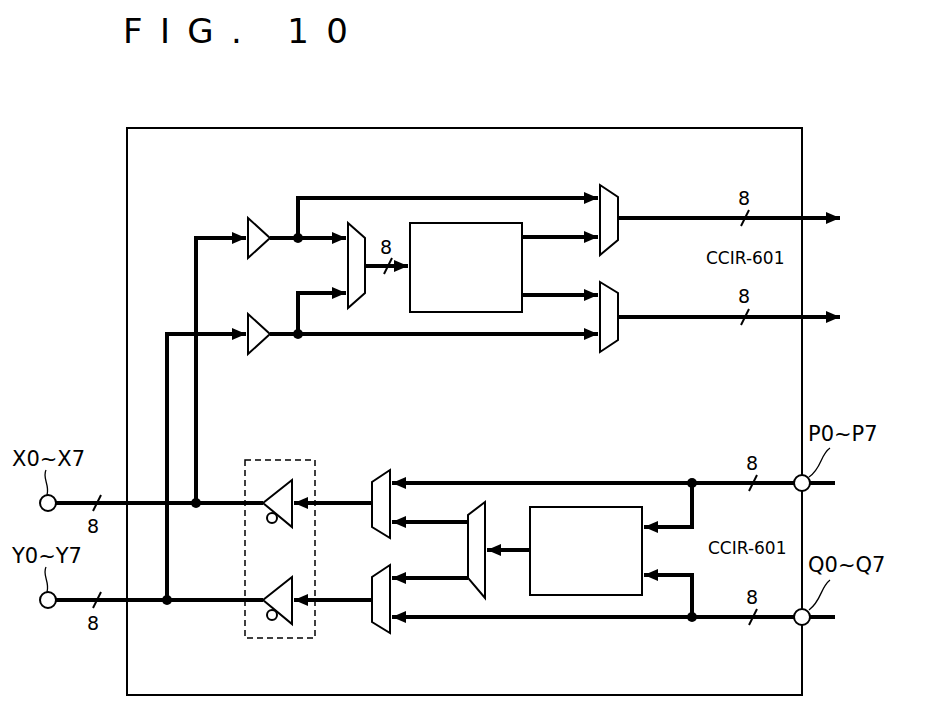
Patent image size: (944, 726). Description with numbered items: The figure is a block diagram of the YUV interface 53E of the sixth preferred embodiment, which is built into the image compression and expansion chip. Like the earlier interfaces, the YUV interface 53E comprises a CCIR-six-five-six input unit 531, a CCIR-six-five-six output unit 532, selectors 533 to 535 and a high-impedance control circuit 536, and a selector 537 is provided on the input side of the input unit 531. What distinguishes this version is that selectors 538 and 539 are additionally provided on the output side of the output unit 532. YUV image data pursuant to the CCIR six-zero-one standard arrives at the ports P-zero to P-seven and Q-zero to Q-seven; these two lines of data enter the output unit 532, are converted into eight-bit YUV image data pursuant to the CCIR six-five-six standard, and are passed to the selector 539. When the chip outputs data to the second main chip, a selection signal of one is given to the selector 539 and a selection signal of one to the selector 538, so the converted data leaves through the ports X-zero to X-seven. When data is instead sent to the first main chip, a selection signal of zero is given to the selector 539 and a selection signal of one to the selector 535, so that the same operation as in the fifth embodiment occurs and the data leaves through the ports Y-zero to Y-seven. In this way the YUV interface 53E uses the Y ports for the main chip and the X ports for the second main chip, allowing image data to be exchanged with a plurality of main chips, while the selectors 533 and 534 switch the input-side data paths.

The YUV interface 53E is at (677, 128).
The CCIR-656 input unit 531 is at (467, 222).
The CCIR-656 output unit 532 is at (587, 507).
The selector 533 is at (606, 187).
The selector 534 is at (607, 348).
The selector 535 is at (383, 634).
The high-impedance control circuit 536 is at (280, 458).
The selector 537 is at (357, 224).
The selector 538 is at (383, 470).
The selector 539 is at (478, 502).